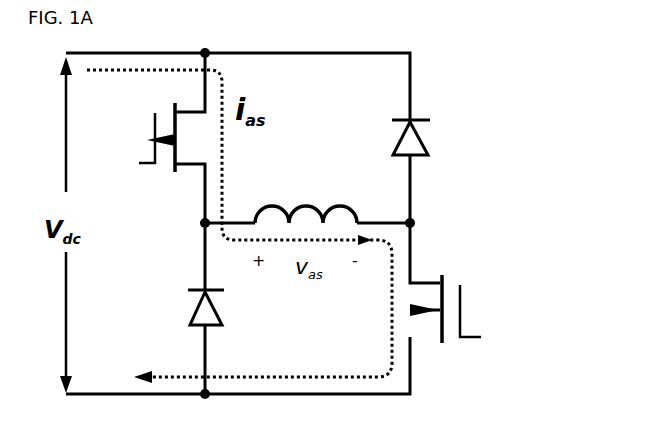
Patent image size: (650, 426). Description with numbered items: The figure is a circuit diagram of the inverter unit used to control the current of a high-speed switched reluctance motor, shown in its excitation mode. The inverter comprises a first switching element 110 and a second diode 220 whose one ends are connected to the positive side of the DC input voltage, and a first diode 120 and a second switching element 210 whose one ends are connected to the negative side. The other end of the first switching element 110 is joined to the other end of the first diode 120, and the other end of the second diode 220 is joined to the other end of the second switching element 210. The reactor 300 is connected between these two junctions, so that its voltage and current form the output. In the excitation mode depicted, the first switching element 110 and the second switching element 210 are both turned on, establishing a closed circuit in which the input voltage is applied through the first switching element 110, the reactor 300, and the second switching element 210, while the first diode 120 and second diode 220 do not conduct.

The first switching element 110 is at (131, 126).
The first diode 120 is at (164, 287).
The second diode 220 is at (448, 154).
The second switching element 210 is at (474, 336).
The reactor 300 is at (306, 176).